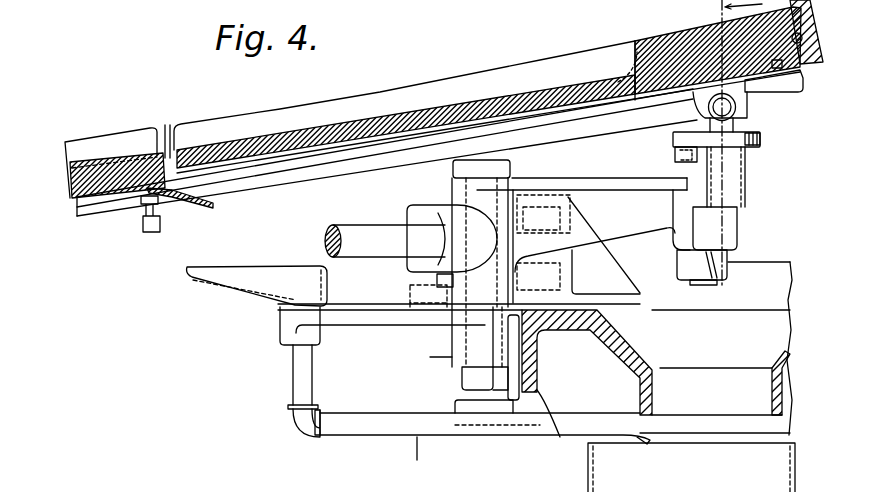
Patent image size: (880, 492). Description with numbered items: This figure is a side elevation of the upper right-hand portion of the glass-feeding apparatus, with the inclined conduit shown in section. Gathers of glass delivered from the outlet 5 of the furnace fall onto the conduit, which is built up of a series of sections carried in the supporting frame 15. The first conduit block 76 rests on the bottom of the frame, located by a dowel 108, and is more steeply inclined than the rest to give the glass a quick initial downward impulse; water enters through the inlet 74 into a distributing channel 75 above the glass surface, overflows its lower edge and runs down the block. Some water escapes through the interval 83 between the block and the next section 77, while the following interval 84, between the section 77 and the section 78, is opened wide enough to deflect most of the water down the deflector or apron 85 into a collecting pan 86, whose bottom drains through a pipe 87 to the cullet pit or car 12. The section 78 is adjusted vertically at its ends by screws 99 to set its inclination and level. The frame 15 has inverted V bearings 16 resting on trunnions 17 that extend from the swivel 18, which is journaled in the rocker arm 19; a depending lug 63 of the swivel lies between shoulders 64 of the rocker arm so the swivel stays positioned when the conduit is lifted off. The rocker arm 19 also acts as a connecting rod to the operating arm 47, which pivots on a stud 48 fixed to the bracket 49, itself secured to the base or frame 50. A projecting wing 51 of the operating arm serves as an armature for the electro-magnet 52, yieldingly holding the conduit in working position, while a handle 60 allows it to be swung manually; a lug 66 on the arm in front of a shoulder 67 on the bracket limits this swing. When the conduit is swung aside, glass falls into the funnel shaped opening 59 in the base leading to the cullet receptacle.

The outlet 5 is at (742, 142).
The cullet pit or car 12 is at (630, 478).
The supporting frame 15 is at (263, 182).
The inverted V bearings 16 is at (748, 113).
The trunnions 17 is at (713, 108).
The swivel 18 is at (760, 130).
The rocker arm 19 is at (745, 188).
The operating arm 47 is at (600, 184).
The stud 48 is at (511, 167).
The bracket 49 is at (450, 357).
The base or frame 50 is at (573, 320).
The projecting wing 51 is at (517, 288).
The electro-magnet 52 is at (550, 218).
The funnel shaped opening 59 is at (722, 378).
The handle 60 is at (353, 230).
The depending lug 63 is at (760, 145).
The shoulders 64 is at (697, 140).
The lug 66 is at (408, 286).
The shoulder 67 is at (415, 288).
The inlet 74 is at (805, 67).
The distributing channel 75 is at (803, 14).
The conduit block 76 is at (697, 36).
The section 77 is at (533, 64).
The section 78 is at (115, 135).
The interval or interruption 83 is at (638, 58).
The interval 84 is at (164, 126).
The deflector or apron 85 is at (211, 206).
The collecting pan 86 is at (213, 290).
The pipe 87 is at (293, 378).
The screws 99 is at (144, 234).
The dowel 108 is at (778, 74).